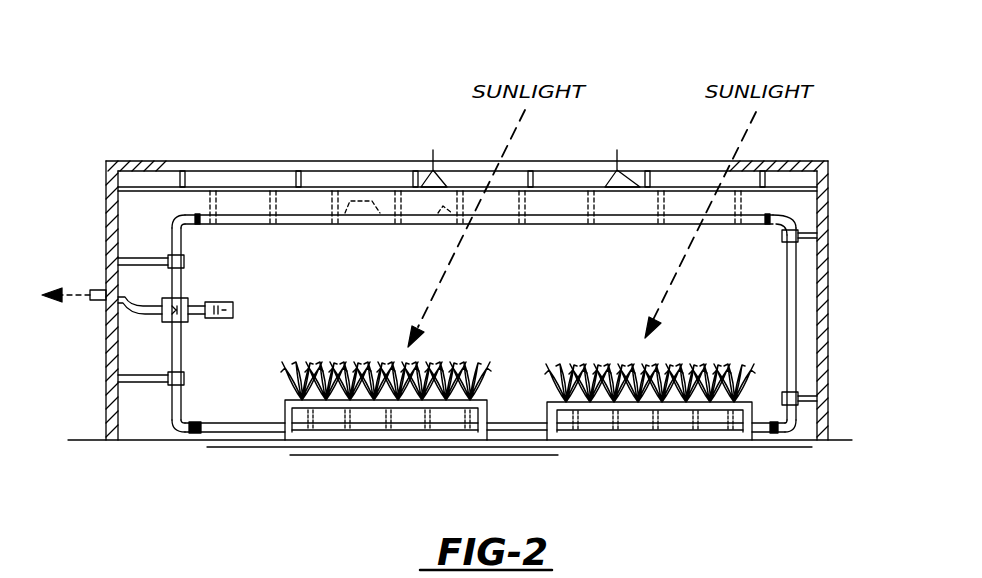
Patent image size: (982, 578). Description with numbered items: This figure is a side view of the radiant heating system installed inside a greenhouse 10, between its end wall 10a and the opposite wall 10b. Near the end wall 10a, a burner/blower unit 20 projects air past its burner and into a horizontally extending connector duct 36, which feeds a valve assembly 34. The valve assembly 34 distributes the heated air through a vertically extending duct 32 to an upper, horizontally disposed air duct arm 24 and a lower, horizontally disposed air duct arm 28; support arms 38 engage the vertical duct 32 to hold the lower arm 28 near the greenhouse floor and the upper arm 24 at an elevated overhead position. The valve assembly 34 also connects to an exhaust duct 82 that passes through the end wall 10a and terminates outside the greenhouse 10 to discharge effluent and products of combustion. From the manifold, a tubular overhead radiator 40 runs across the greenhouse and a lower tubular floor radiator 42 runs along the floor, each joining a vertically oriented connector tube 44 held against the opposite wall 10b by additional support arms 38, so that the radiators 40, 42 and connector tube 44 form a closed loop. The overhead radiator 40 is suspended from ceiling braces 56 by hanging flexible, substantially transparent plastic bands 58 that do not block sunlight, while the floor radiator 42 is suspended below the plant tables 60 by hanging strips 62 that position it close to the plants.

The greenhouse 10 is at (126, 162).
The greenhouse end wall 10a is at (107, 406).
The opposite wall 10b is at (829, 196).
The burner/blower unit 20 is at (240, 310).
The upper air duct arm 24 is at (176, 216).
The lower air duct arm 28 is at (177, 441).
The vertical duct 32 is at (170, 238).
The valve assembly 34 is at (190, 320).
The connector duct 36 is at (196, 300).
The support arms 38 is at (185, 262).
The overhead radiator 40 is at (307, 214).
The floor radiator 42 is at (253, 433).
The connector tube 44 is at (787, 318).
The ceiling braces 56 is at (433, 162).
The plastic bands 58 is at (407, 227).
The tables 60 is at (547, 410).
The hanging strips 62 is at (360, 418).
The exhaust duct 82 is at (157, 322).